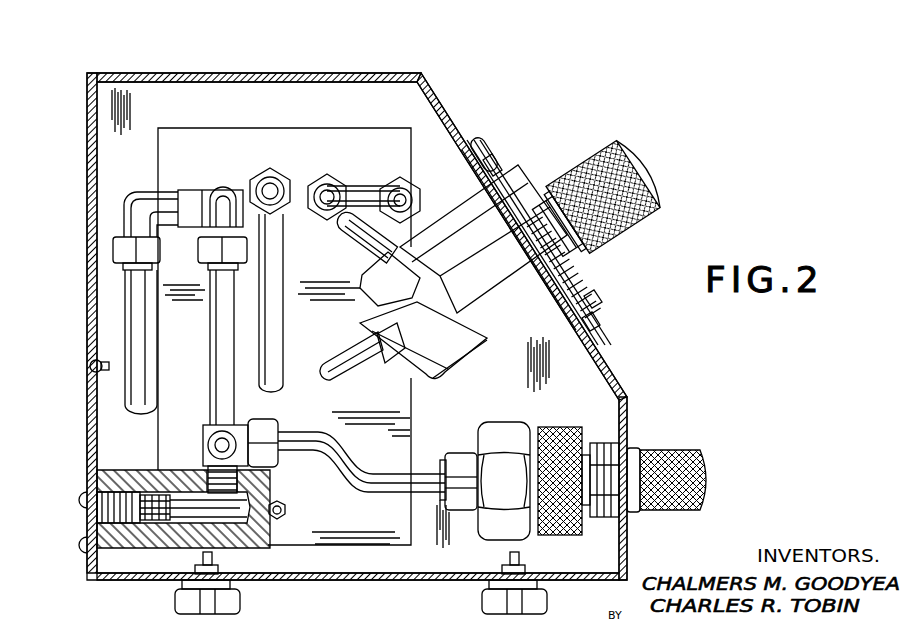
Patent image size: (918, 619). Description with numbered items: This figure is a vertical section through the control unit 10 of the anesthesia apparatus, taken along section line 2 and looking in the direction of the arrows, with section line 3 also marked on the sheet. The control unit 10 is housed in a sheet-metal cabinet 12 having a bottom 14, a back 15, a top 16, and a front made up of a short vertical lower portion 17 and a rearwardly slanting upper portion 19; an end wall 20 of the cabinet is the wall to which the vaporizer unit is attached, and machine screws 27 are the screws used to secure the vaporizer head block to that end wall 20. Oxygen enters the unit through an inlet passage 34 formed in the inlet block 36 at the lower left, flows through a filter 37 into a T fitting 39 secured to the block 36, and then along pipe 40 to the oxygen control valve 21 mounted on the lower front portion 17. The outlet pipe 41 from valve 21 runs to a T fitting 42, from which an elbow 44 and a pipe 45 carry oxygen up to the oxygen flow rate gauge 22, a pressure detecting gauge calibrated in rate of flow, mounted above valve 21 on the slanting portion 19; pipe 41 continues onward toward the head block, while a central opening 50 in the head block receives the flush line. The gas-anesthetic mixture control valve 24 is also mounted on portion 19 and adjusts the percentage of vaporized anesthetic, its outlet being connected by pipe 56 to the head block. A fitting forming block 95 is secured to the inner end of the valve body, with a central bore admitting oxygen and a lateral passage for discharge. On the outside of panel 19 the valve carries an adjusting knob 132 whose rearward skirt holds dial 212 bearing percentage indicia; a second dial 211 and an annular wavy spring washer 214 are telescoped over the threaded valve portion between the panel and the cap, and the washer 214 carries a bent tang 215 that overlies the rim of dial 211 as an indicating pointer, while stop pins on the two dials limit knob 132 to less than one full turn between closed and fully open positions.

The section line 2— 2 is at (227, 25).
The section line 3— 3 is at (444, 23).
The control unit 10 is at (378, 67).
The cabinet 12 is at (82, 581).
The bottom 14 is at (373, 590).
The back 15 is at (87, 156).
The top 16 is at (320, 75).
The lower portion of front 17 is at (630, 426).
The upper portion of front 19 is at (600, 352).
The end wall 20 is at (190, 150).
The oxygen control valve 21 is at (600, 556).
The oxygen flow rate gauge 22 is at (477, 213).
The gas-anesthetic mixture control valve 24 is at (598, 270).
The machine screws 27 is at (358, 192).
The inlet passage 34 is at (97, 526).
The inlet block 36 is at (265, 557).
The filter 37 is at (123, 557).
The T fitting 39 is at (205, 455).
The pipe 40 is at (348, 432).
The outlet pipe 41 is at (210, 347).
The T fitting 42 is at (212, 190).
The elbow 44 is at (135, 204).
The pipe 45 is at (125, 278).
The central opening 50 is at (282, 178).
The pipe 56 is at (348, 186).
The fitting forming block 95 is at (420, 247).
The adjusting knob 132 is at (572, 168).
The dial 211 is at (593, 322).
The dial 212 is at (598, 297).
The spring washer 214 is at (492, 160).
The tang 215 is at (468, 140).